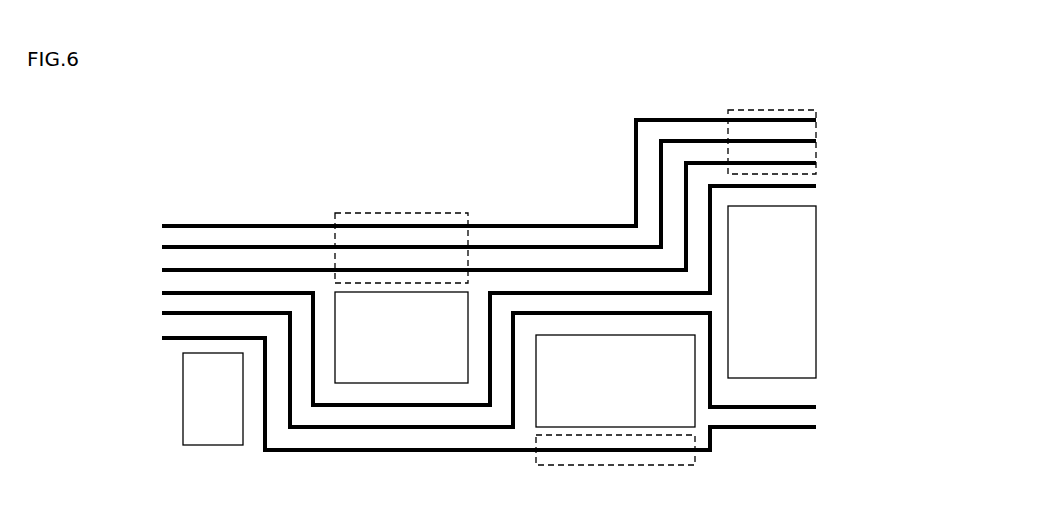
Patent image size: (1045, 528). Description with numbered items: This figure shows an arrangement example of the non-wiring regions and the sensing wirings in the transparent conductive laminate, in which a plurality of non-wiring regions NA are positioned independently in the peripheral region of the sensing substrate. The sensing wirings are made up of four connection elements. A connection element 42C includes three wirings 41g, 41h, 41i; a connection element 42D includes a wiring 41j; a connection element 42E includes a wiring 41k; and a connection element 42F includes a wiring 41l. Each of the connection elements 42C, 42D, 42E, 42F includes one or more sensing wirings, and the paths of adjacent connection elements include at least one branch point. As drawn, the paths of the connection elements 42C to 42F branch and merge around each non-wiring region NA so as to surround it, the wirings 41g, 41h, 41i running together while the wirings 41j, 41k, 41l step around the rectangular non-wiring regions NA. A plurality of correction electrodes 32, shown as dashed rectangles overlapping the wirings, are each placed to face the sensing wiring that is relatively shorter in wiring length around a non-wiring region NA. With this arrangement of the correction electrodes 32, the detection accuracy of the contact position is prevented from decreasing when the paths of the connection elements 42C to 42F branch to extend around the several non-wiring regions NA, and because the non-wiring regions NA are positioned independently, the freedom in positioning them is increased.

The connection element 42C is at (313, 184).
The wiring 41g is at (182, 222).
The wiring 41h is at (226, 247).
The wiring 41i is at (276, 270).
The connection element 42D is at (97, 250).
The wiring 41j is at (161, 291).
The connection element 42E is at (97, 293).
The wiring 41k is at (161, 312).
The connection element 42F is at (97, 338).
The wiring 41l is at (161, 336).
The correction electrode 32 is at (400, 212).
The non-wiring region NA is at (213, 445).